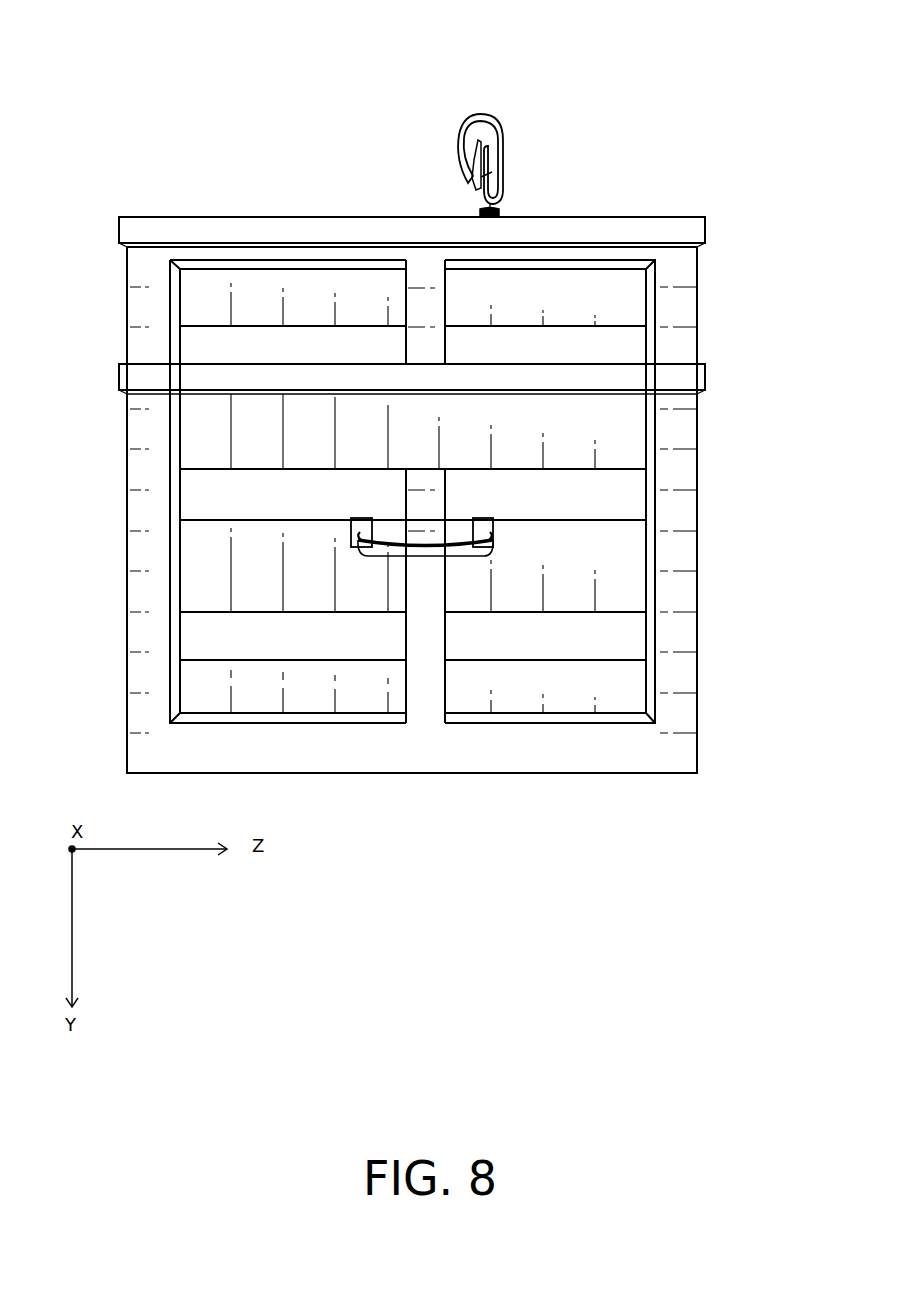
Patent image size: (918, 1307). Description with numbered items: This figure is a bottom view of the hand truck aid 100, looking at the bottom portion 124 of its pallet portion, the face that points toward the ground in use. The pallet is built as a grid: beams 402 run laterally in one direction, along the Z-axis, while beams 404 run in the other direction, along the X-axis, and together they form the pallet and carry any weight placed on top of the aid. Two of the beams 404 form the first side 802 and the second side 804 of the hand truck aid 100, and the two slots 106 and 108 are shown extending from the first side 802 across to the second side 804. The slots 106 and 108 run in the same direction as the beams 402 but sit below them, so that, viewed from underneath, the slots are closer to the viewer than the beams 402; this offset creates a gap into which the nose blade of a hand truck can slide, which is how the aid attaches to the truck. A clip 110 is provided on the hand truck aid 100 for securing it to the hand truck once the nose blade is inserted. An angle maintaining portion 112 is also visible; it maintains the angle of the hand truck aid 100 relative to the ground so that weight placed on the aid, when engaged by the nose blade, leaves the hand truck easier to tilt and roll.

The hand truck aid 100 is at (738, 38).
The slot 106 is at (706, 243).
The slot 108 is at (706, 380).
The clip 110 is at (482, 116).
The angle maintaining portion 112 is at (419, 558).
The bottom portion 124 is at (535, 620).
The beams 402 is at (305, 313).
The beams 404 is at (133, 483).
The first side 802 is at (706, 292).
The second side 804 is at (126, 299).